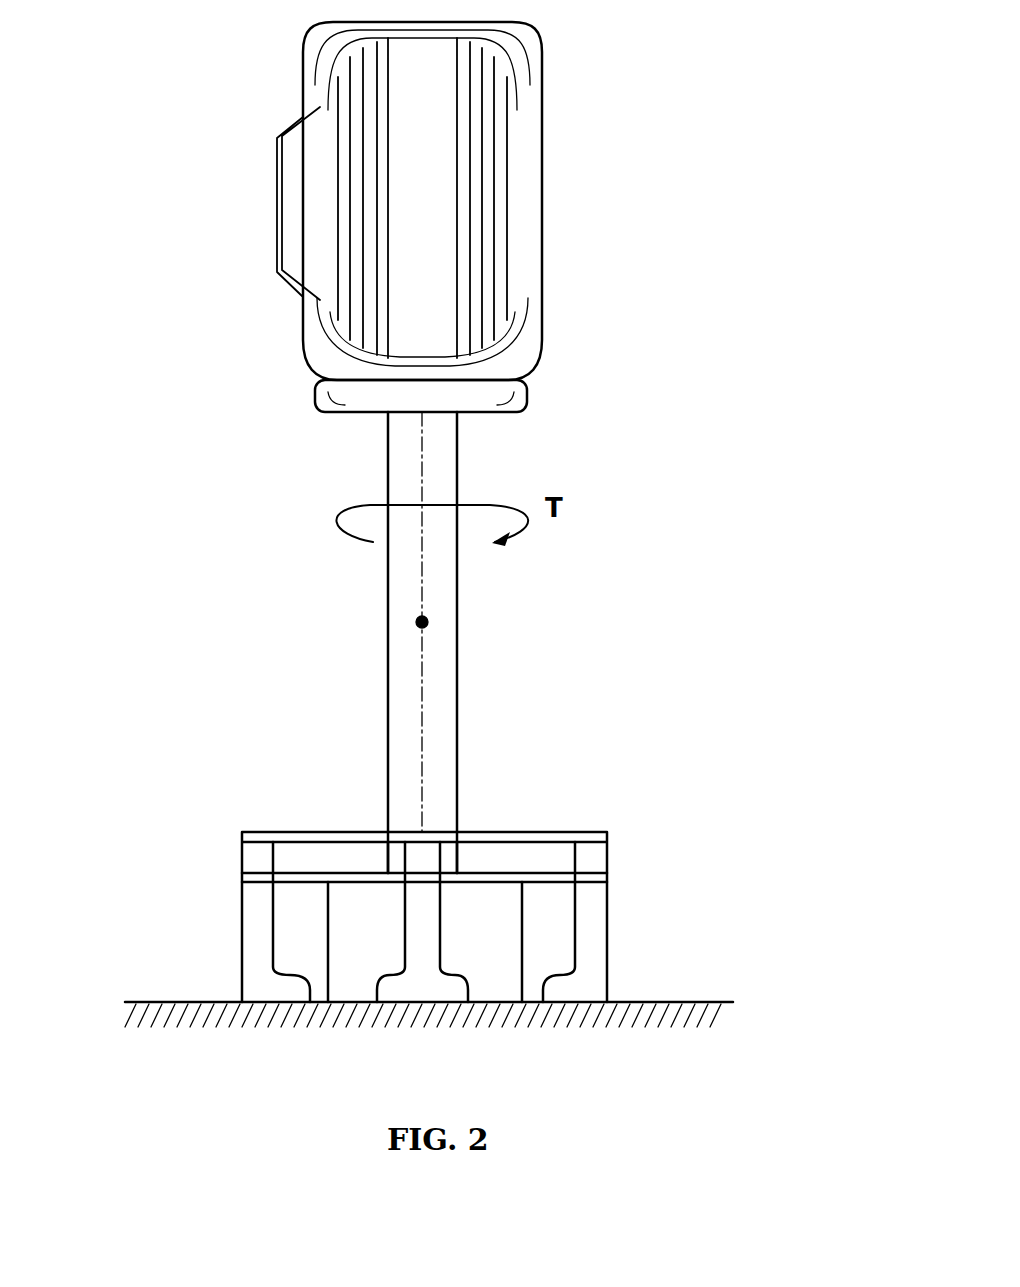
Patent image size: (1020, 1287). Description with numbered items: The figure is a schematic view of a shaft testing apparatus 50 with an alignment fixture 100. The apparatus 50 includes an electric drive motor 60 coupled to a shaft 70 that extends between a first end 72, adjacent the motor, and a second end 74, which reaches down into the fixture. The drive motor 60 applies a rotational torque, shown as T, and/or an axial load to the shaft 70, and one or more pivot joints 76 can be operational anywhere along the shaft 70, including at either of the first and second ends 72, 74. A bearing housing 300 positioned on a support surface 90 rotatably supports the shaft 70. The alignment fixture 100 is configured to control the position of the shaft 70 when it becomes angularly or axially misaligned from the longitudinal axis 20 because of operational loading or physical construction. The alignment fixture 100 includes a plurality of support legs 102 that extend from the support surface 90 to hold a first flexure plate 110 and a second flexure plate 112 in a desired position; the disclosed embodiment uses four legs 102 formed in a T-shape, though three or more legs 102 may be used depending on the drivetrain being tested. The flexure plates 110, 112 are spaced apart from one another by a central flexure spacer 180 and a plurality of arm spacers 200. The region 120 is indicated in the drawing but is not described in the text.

The electric drive motor 60 is at (542, 198).
The shaft 70 is at (440, 450).
The first end 72 is at (385, 413).
The longitudinal axis 20 is at (420, 593).
The pivot joint 76 is at (422, 622).
The second end 74 is at (442, 832).
The shaft testing apparatus 50 is at (688, 470).
The alignment fixture 100 is at (168, 822).
The base assembly 120 is at (553, 799).
The first flexure plate 110 is at (305, 832).
The second flexure plate 112 is at (533, 868).
The central flexure spacer 180 is at (447, 862).
The arm spacer 200 is at (256, 862).
The support leg 102 is at (257, 935).
The bearing housing 300 is at (358, 965).
The support surface 90 is at (688, 1002).